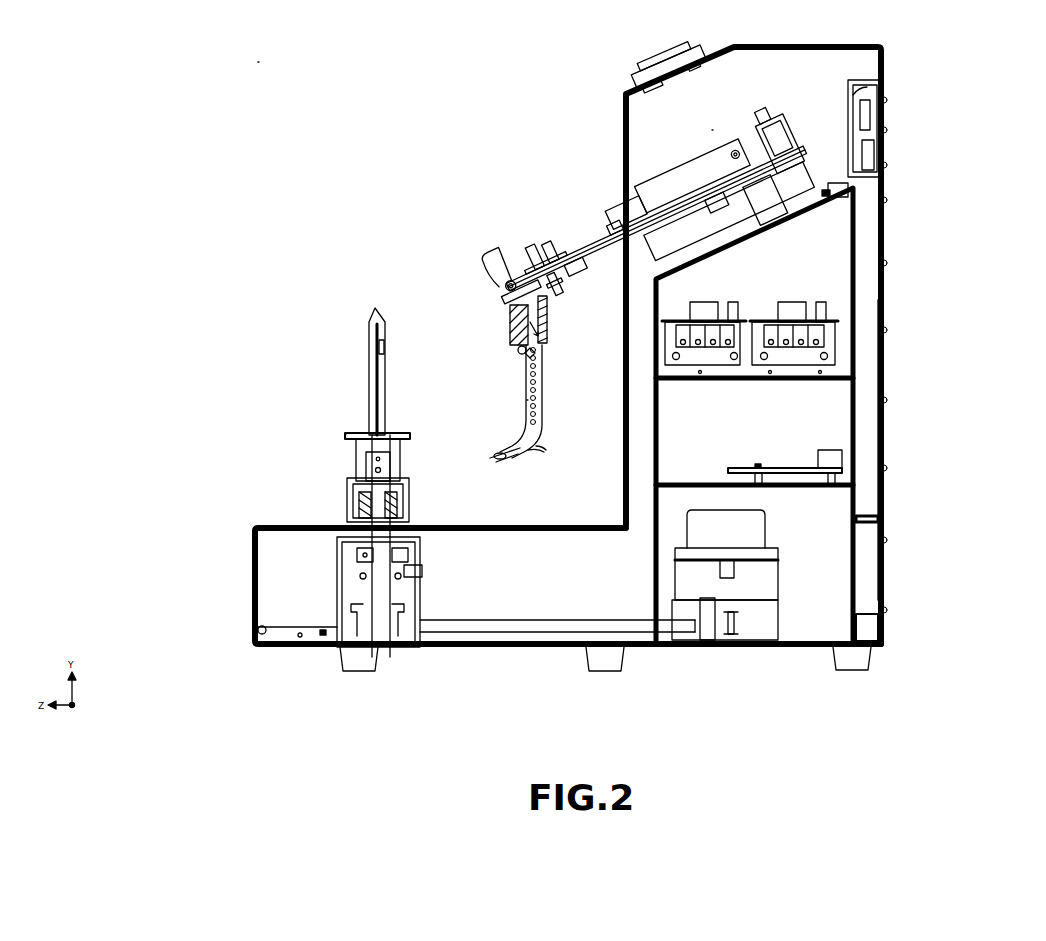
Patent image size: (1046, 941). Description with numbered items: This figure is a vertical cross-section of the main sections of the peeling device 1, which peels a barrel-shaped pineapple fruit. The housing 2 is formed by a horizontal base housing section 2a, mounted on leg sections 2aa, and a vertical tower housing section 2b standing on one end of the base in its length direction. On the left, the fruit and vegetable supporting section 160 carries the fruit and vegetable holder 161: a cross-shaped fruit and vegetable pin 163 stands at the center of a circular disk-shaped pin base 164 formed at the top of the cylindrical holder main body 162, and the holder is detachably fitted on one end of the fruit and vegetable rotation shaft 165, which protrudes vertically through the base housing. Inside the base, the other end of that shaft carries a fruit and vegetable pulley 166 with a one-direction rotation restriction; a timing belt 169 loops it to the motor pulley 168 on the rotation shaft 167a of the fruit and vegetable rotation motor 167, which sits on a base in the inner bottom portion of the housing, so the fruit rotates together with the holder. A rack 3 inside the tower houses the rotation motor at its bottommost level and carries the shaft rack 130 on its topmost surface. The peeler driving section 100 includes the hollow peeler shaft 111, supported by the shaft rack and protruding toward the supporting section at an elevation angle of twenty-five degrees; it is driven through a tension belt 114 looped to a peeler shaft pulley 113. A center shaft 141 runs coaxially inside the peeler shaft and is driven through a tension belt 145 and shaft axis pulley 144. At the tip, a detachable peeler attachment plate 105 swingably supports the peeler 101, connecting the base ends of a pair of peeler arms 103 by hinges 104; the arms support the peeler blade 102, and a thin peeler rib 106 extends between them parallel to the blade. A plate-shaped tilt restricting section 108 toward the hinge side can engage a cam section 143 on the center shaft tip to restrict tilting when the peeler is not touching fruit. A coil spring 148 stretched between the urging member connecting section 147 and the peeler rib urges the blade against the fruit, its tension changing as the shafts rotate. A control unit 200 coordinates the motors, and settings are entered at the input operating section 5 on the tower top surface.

The peeling device 1 is at (375, 160).
The housing 2 is at (882, 326).
The base housing section 2a is at (252, 588).
The tower housing section 2b is at (882, 452).
The leg sections 2aa is at (864, 664).
The rack 3 is at (852, 268).
The input operating section 5 is at (670, 78).
The peeler driving section 100 is at (712, 128).
The peeler 101 is at (500, 392).
The peeler blade 102 is at (524, 452).
The peeler arms 103 is at (524, 410).
The hinges 104 is at (497, 288).
The peeler attachment plate 105 is at (548, 298).
The peeler rib 106 is at (518, 372).
The tilt restricting section 108 is at (546, 340).
The peeler shaft 111 is at (545, 258).
The peeler shaft pulley 113 is at (655, 195).
The tension belt 114 is at (636, 185).
The shaft rack 130 is at (838, 196).
The center shaft 141 is at (522, 268).
The cam section 143 is at (548, 342).
The shaft axis pulley 144 is at (780, 136).
The tension belt 145 is at (774, 118).
The urging member connecting section 147 is at (498, 310).
The coil spring 148 is at (503, 340).
The fruit and vegetable supporting section 160 is at (258, 408).
The fruit and vegetable holder 161 is at (368, 330).
The holder main body 162 is at (356, 476).
The fruit and vegetable pin 163 is at (372, 358).
The pin base 164 is at (356, 436).
The fruit and vegetable rotation shaft 165 is at (392, 508).
The fruit and vegetable pulley 166 is at (405, 622).
The fruit and vegetable rotation motor 167 is at (768, 586).
The rotation shaft 167a is at (714, 610).
The motor pulley 168 is at (736, 628).
The timing belt 169 is at (514, 626).
The control unit 200 is at (795, 470).